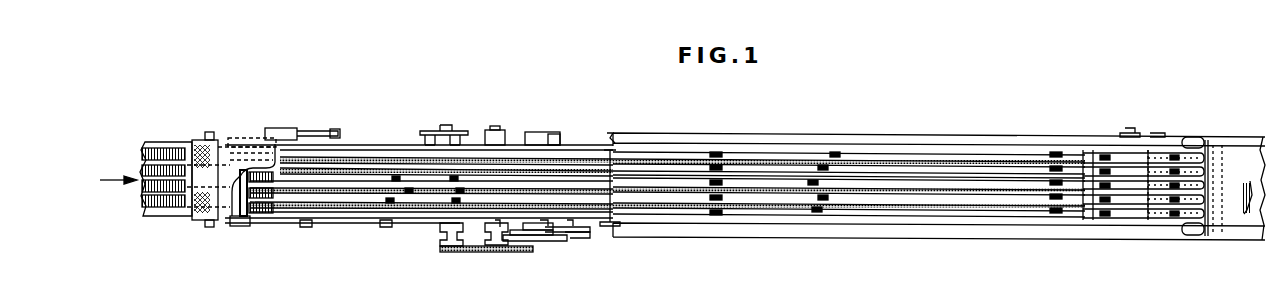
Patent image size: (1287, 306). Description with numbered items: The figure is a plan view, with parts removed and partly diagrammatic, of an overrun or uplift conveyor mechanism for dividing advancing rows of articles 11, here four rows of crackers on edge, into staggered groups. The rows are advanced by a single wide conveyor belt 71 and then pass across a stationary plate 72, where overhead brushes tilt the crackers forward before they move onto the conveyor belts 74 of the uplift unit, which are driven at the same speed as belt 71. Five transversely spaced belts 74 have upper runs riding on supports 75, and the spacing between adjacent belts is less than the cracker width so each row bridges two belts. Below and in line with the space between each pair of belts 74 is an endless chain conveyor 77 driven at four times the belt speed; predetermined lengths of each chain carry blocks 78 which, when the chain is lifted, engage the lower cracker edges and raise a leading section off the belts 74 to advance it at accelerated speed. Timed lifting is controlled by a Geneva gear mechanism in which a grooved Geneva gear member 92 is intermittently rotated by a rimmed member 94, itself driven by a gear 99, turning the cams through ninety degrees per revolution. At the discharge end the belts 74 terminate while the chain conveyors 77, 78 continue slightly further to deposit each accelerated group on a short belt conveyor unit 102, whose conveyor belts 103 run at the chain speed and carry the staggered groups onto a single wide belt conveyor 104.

The inlet strip material 11 is at (158, 143).
The conveyor belt 71 is at (165, 217).
The stationary plate 72 is at (255, 142).
The conveyor belts 74 is at (270, 218).
The supports 75 is at (560, 168).
The endless chain conveyor 77 is at (680, 207).
The blocks 78 is at (397, 190).
The Geneva gear member 92 is at (567, 238).
The rimmed member 94 is at (533, 242).
The gear 99 is at (480, 254).
The belt conveyor unit 102 is at (1153, 142).
The conveyor belts 103 is at (1162, 158).
The single wide belt conveyor 104 is at (1252, 213).